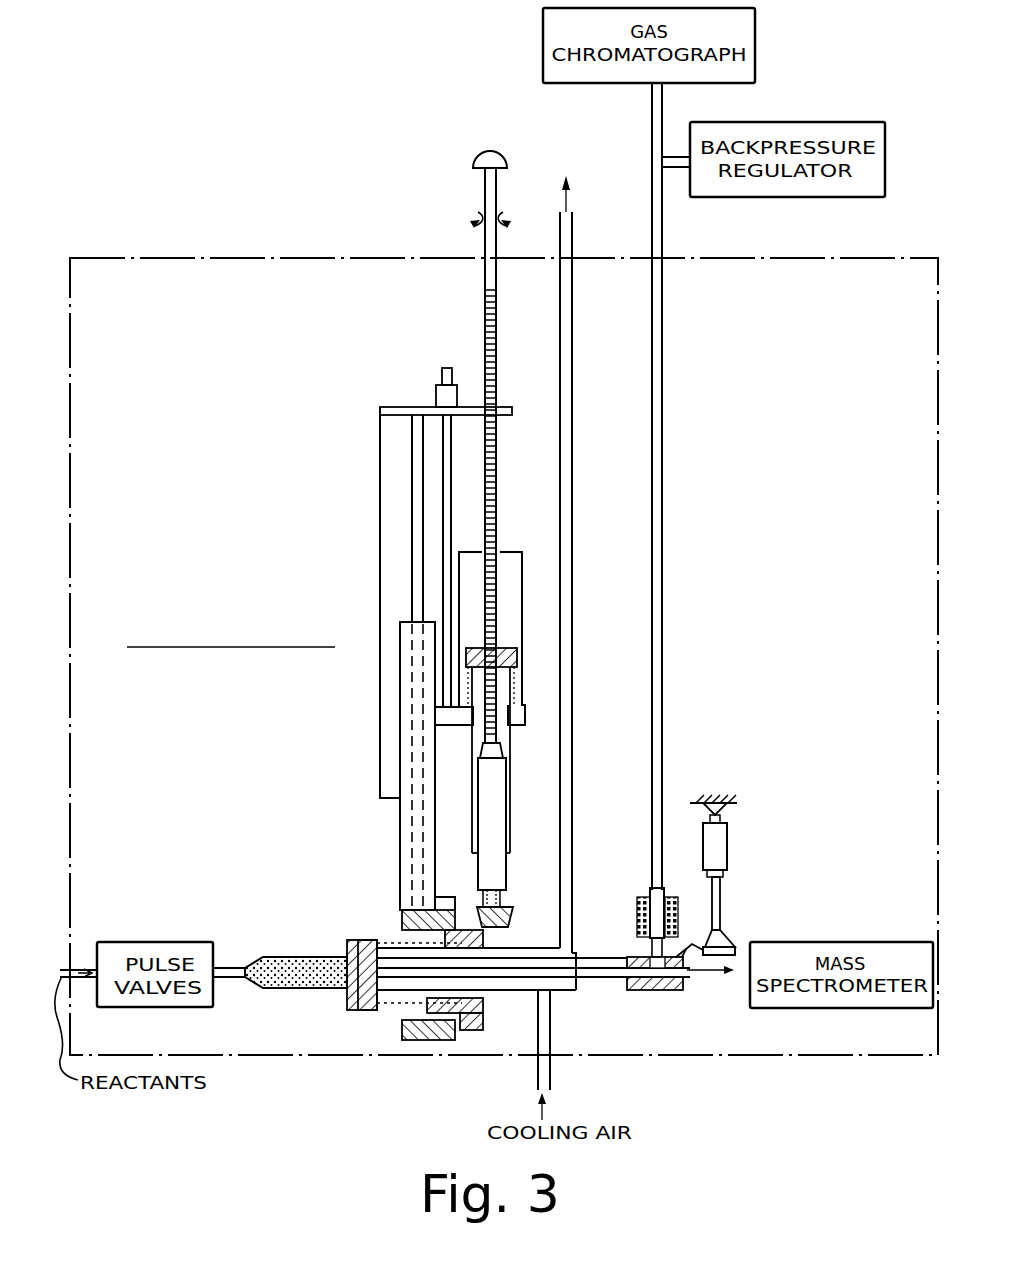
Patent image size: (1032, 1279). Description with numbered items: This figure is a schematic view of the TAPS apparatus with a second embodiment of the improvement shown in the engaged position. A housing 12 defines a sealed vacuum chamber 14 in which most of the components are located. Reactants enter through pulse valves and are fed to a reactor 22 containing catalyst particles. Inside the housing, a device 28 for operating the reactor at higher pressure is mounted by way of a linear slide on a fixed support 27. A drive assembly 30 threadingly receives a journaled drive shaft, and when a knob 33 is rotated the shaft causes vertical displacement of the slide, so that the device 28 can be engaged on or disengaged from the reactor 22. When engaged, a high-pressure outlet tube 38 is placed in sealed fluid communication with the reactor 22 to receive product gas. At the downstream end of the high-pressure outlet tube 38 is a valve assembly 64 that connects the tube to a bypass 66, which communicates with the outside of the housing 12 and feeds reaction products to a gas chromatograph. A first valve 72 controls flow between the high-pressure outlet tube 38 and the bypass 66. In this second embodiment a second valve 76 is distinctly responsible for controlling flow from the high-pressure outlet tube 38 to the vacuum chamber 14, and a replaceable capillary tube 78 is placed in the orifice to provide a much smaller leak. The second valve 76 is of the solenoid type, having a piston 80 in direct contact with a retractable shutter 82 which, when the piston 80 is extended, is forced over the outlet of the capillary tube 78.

The housing 12 is at (233, 259).
The vacuum chamber 14 is at (230, 739).
The reactor 22 is at (283, 957).
The fixed support 27 is at (380, 508).
The device 28 is at (356, 410).
The drive assembly 30 is at (516, 540).
The knob 33 is at (478, 156).
The high-pressure outlet tube 38 is at (600, 980).
The valve assembly 64 is at (744, 840).
The bypass 66 is at (662, 633).
The first valve 72 is at (637, 914).
The second valve 76 is at (727, 842).
The replaceable capillary tube 78 is at (684, 976).
The piston 80 is at (720, 895).
The retractable shutter 82 is at (732, 945).